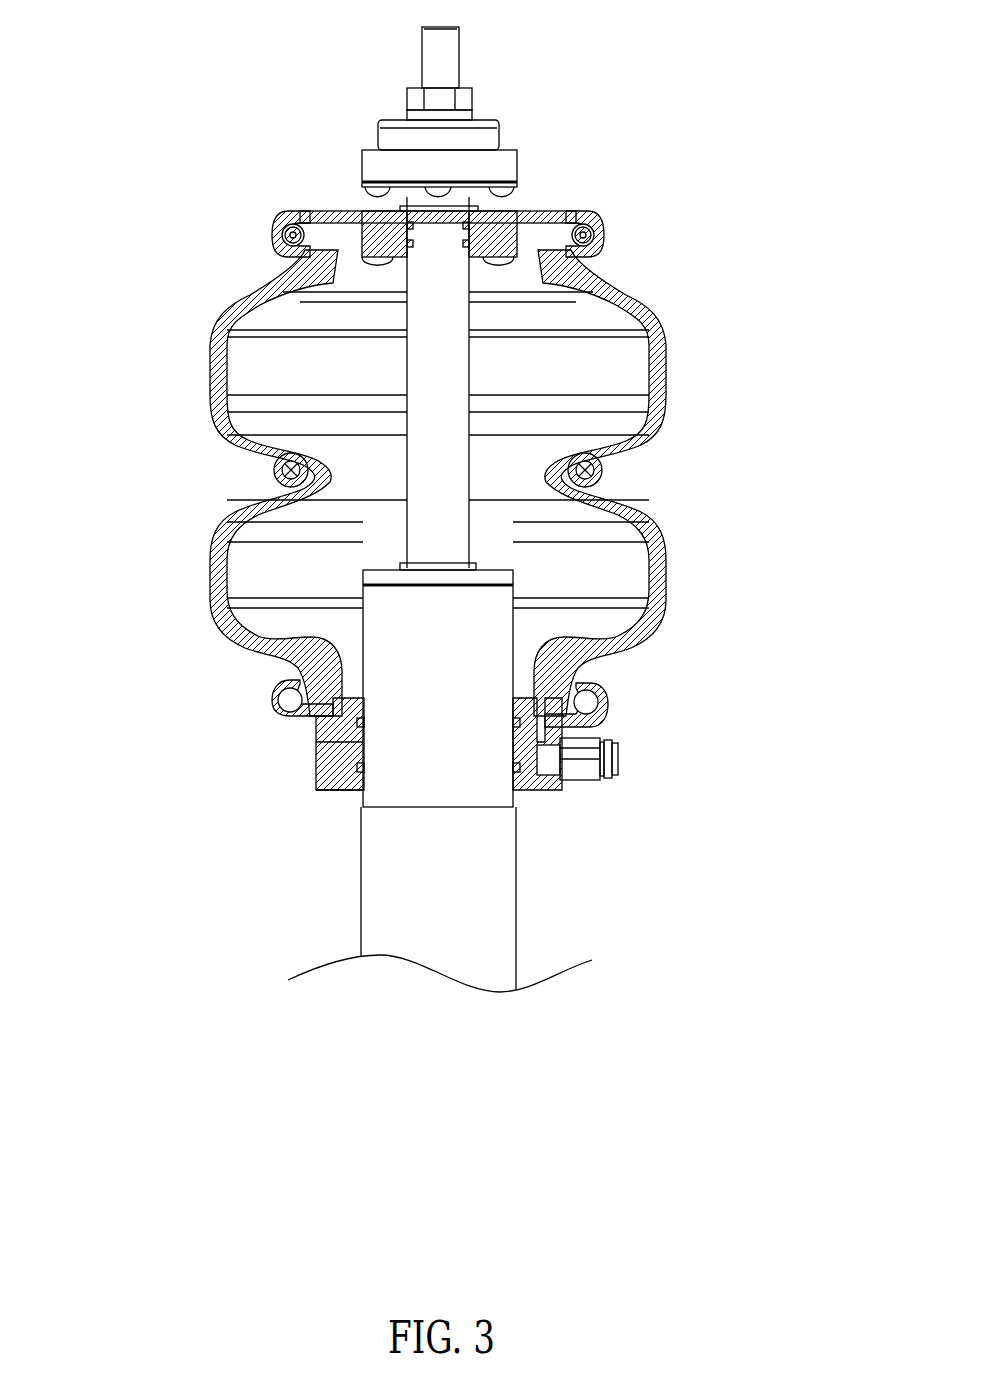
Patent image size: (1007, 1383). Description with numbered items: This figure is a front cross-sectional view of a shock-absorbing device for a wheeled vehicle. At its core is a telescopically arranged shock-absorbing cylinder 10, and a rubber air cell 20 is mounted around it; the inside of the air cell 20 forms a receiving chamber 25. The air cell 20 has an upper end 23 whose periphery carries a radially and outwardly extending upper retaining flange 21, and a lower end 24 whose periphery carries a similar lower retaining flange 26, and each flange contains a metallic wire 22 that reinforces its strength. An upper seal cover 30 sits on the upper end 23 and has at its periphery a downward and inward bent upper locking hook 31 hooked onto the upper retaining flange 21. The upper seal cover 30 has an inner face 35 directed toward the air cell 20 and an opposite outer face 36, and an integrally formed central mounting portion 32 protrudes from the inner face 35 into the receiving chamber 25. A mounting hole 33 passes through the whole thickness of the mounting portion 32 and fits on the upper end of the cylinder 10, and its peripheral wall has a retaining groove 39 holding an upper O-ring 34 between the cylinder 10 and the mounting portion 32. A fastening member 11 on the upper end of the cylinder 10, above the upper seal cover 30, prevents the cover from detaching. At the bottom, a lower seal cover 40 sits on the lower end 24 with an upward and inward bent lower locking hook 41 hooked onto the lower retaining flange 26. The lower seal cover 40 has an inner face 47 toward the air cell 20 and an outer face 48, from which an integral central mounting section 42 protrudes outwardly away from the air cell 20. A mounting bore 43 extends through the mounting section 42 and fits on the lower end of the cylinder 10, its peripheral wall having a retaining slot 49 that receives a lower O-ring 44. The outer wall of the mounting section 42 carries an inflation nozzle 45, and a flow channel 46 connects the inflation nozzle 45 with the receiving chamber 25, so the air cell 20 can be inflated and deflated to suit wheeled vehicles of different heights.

The shock-absorbing cylinder 10 is at (488, 898).
The fastening member 11 is at (487, 125).
The air cell 20 is at (429, 483).
The upper retaining flange 21 is at (268, 237).
The metallic wire 22 is at (273, 210).
The upper end 23 is at (637, 278).
The lower end 24 is at (562, 672).
The receiving chamber 25 is at (583, 370).
The lower retaining flange 26 is at (302, 650).
The upper seal cover 30 is at (582, 207).
The upper locking hook 31 is at (605, 237).
The mounting portion 32 is at (485, 262).
The mounting hole 33 is at (405, 215).
The upper O-ring 34 is at (375, 235).
The inner face 35 is at (335, 300).
The outer face 36 is at (318, 211).
The retaining groove 39 is at (540, 222).
The lower seal cover 40 is at (435, 790).
The lower locking hook 41 is at (590, 685).
The mounting section 42 is at (342, 795).
The mounting bore 43 is at (316, 743).
The lower O-ring 44 is at (548, 790).
The inflation nozzle 45 is at (590, 776).
The flow channel 46 is at (617, 751).
The inner face 47 is at (545, 700).
The outer face 48 is at (333, 700).
The retaining slot 49 is at (530, 733).